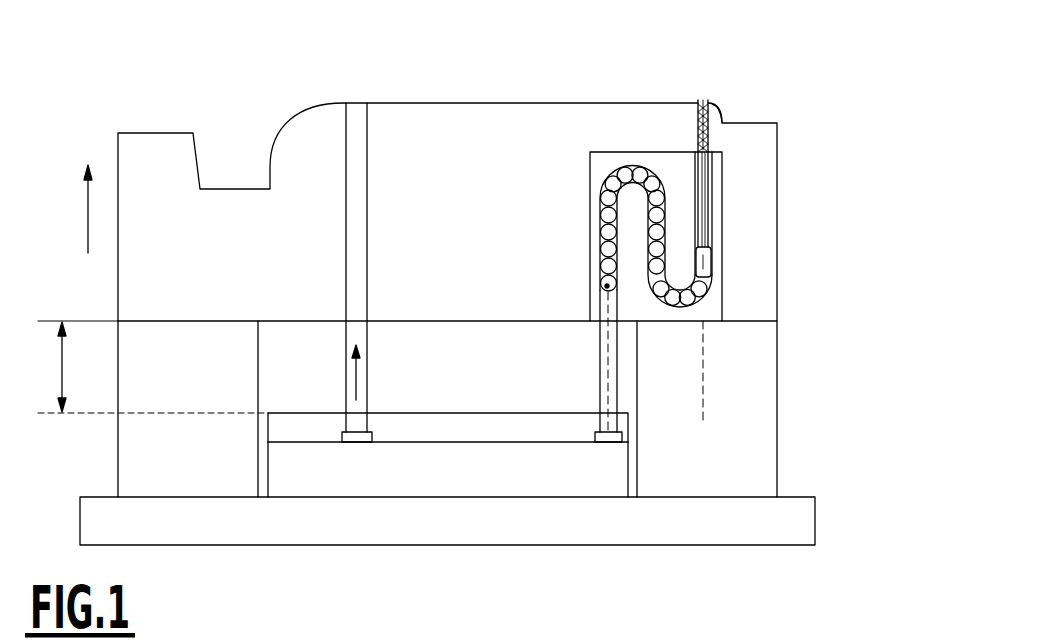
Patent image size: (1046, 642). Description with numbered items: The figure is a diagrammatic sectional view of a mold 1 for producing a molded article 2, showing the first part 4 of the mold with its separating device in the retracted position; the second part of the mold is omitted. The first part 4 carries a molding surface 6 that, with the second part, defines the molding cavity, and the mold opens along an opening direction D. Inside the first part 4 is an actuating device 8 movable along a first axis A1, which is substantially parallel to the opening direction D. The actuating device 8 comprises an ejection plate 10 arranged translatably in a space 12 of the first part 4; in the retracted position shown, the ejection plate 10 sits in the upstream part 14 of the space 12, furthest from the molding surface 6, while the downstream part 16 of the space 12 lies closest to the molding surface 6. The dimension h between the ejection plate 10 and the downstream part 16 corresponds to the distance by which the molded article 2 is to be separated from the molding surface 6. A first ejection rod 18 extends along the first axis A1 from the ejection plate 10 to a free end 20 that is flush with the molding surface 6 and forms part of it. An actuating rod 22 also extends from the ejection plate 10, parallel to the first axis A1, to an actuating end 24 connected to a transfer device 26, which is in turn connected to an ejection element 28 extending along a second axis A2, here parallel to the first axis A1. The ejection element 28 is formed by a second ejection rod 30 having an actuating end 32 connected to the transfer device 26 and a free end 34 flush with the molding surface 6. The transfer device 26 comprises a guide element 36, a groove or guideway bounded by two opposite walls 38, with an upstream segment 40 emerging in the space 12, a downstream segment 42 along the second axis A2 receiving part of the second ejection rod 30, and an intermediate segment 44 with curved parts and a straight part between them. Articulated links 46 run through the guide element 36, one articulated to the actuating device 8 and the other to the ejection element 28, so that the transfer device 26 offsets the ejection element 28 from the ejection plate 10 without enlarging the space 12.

The mold 1 is at (812, 218).
The molded article 2 is at (564, 103).
The first part 4 is at (728, 372).
The molding surface 6 is at (430, 103).
The actuating device 8 is at (285, 487).
The ejection plate 10 is at (573, 455).
The space 12 is at (277, 425).
The upstream part 14 is at (323, 467).
The downstream part 16 is at (262, 443).
The first ejection rod 18 is at (346, 238).
The free end 20 is at (357, 118).
The actuating rod 22 is at (613, 388).
The actuating end 24 is at (590, 313).
The transfer device 26 is at (598, 197).
The ejection element 28 is at (786, 95).
The second ejection rod 30 is at (719, 113).
The actuating end 32 is at (710, 258).
The free end 34 is at (702, 100).
The guide element 36 is at (638, 163).
The opposite walls 38 is at (598, 263).
The upstream segment 40 is at (606, 286).
The downstream segment 42 is at (710, 193).
The intermediate segment 44 is at (600, 207).
The articulated links 46 is at (710, 285).
The first axis A1 is at (360, 387).
The second axis A2 is at (710, 168).
The opening direction D is at (85, 215).
The dimension h is at (153, 367).